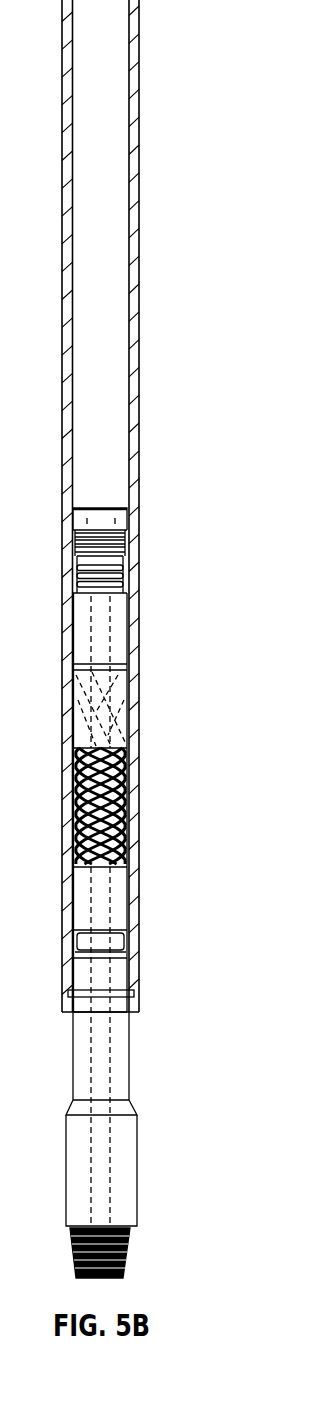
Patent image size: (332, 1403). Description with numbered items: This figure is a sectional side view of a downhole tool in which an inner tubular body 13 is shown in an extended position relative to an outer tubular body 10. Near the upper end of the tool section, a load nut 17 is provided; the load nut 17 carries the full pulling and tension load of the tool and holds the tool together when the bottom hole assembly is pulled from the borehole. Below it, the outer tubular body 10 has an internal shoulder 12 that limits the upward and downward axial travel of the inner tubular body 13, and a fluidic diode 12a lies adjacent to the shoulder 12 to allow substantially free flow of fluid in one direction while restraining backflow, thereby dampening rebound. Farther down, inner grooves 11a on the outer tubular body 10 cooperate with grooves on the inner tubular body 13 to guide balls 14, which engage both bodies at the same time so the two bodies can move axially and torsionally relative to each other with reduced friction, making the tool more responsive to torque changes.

The outer tubular body 10 is at (140, 460).
The load nut 17 is at (127, 518).
The internal shoulder 12 is at (125, 534).
The fluidic diode 12a is at (123, 568).
The inner grooves 11a is at (112, 722).
The balls 14 is at (128, 800).
The inner tubular body 13 is at (115, 1155).